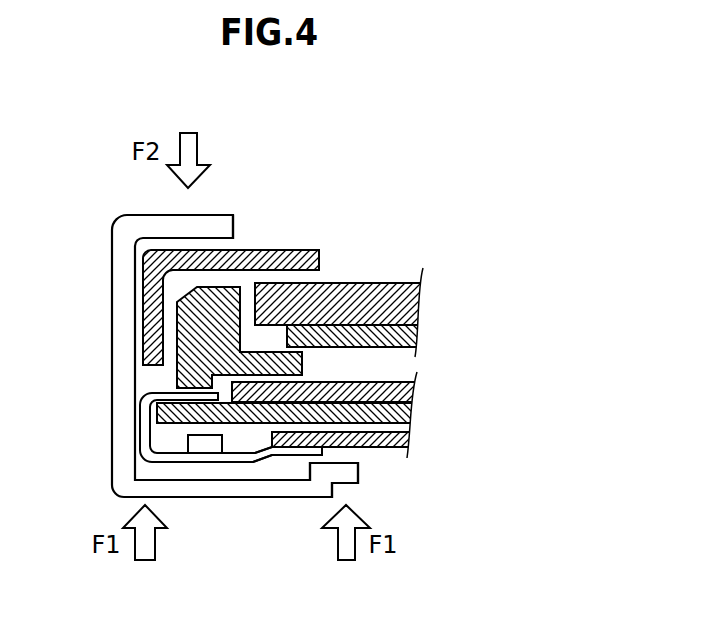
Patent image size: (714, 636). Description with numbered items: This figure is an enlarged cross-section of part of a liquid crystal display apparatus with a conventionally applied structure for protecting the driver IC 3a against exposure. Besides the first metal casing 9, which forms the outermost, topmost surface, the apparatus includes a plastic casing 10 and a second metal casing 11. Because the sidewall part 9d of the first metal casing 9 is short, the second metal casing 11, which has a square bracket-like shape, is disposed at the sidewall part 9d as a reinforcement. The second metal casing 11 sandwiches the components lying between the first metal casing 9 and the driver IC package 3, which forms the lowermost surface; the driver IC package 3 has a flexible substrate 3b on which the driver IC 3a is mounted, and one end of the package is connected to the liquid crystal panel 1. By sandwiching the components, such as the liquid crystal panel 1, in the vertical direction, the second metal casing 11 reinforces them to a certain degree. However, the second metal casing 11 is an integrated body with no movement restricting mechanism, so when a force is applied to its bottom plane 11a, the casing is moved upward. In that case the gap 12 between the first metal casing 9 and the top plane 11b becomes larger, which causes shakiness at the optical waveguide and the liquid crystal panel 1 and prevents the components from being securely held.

The liquid crystal panel 1 is at (337, 412).
The driver IC package 3 is at (135, 448).
The driver IC 3a is at (215, 447).
The flexible substrate 3b is at (190, 463).
The first metal casing 9 is at (310, 258).
The sidewall part 9d is at (150, 313).
The plastic casing 10 is at (197, 342).
The second metal casing 11 is at (97, 275).
The bottom plane 11a is at (282, 488).
The top plane 11b is at (213, 215).
The gap 12 is at (244, 241).